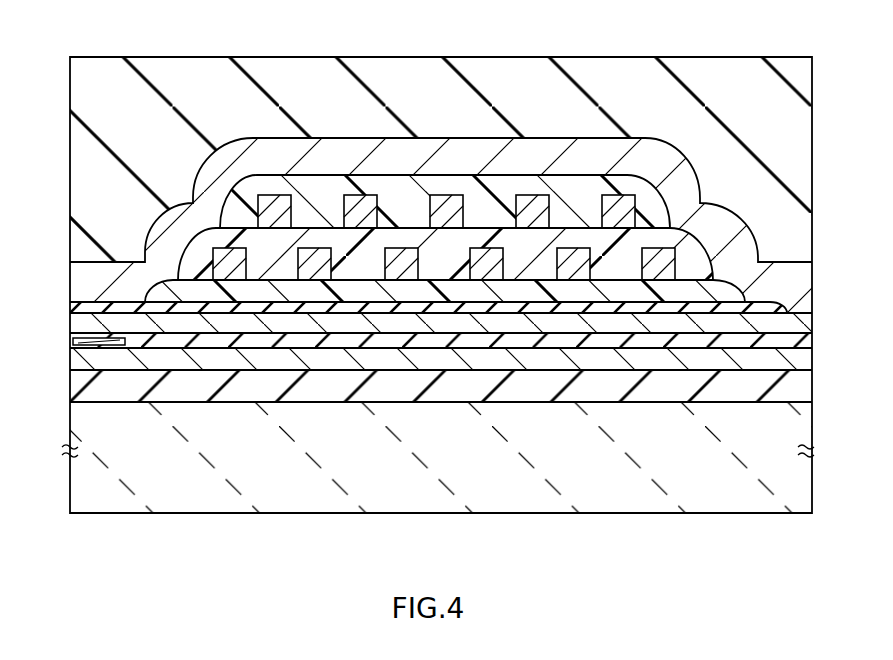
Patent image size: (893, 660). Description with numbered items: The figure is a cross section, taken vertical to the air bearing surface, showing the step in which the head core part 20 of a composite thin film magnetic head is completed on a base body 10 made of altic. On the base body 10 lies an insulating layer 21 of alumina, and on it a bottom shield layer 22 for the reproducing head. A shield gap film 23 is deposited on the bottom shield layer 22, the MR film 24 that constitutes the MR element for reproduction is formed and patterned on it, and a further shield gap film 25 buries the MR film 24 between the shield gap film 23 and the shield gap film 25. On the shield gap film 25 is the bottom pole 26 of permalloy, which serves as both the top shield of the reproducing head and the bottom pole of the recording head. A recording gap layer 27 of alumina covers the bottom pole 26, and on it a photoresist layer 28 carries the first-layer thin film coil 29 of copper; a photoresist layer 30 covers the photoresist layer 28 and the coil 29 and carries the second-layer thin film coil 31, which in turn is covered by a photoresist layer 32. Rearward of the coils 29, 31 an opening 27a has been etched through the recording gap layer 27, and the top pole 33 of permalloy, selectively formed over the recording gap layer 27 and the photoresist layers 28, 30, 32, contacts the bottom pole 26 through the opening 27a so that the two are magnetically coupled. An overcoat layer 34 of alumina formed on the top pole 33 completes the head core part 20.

The base body 10 is at (166, 504).
The head core part 20 is at (68, 335).
The insulating layer 21 is at (233, 393).
The bottom shield layer 22 is at (260, 358).
The shield gap film 23 is at (343, 340).
The MR film 24 is at (117, 346).
The shield gap film 25 is at (441, 451).
The bottom pole 26 is at (423, 325).
The recording gap layer 27 is at (508, 307).
The opening 27a is at (778, 300).
The photoresist layer 28 is at (532, 292).
The thin film coil 29 is at (580, 272).
The photoresist layer 30 is at (605, 268).
The thin film coil 31 is at (622, 212).
The photoresist layer 32 is at (660, 208).
The top pole 33 is at (547, 145).
The overcoat layer 34 is at (400, 70).